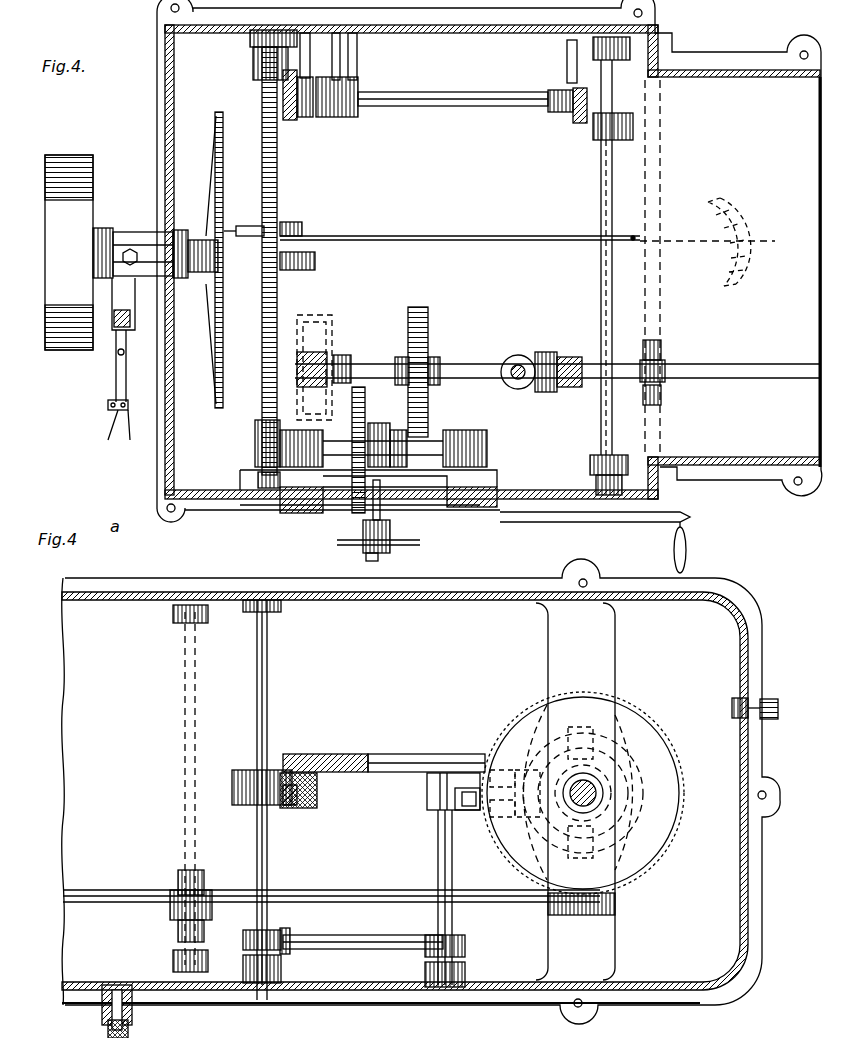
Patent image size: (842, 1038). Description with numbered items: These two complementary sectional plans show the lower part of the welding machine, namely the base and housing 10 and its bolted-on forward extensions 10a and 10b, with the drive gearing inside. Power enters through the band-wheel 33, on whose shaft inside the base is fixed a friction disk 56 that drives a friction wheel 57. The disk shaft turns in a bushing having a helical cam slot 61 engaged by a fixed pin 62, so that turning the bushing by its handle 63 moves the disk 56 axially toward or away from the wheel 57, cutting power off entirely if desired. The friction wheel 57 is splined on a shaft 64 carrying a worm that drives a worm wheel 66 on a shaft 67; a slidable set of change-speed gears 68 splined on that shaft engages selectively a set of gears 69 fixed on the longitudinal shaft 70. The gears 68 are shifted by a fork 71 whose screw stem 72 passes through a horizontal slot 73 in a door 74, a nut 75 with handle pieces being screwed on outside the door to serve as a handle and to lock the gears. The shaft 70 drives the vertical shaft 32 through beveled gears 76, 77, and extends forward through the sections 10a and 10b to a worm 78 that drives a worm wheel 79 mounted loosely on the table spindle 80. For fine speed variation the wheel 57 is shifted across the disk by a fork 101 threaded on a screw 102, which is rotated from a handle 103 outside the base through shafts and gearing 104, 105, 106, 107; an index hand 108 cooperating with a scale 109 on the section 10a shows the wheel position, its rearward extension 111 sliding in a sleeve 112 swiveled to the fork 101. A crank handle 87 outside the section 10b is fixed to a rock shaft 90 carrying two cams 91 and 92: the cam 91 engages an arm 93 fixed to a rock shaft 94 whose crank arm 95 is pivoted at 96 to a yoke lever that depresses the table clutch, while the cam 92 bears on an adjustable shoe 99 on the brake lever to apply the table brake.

In FIG. 4, the base and housing 10 is at (175, 108).
In FIG. 4, the forward sectional extension 10a is at (732, 268).
In FIG. 4A, the front section 10b is at (421, 791).
In FIG. 4, the band-wheel 33 is at (92, 158).
In FIG. 4, the helical cam slot 61 is at (130, 224).
In FIG. 4, the fixed pin 62 is at (128, 318).
In FIG. 4, the handle 63 is at (108, 430).
In FIG. 4, the friction disk 56 is at (224, 162).
In FIG. 4, the sleeve 112 is at (262, 222).
In FIG. 4, the shaft 64 is at (280, 200).
In FIG. 4, the fork 101 is at (302, 236).
In FIG. 4, the rearward extension 111 is at (437, 240).
In FIG. 4, the friction wheel 57 is at (318, 262).
In FIG. 4, the shafts and gearing 107 is at (296, 123).
In FIG. 4, the shafts and gearing 106 is at (482, 106).
In FIG. 4, the shafts and gearing 105 is at (588, 125).
In FIG. 4, the shafts and gearing 104 is at (606, 199).
In FIG. 4, the index hand 108 is at (688, 241).
In FIG. 4, the scale 109 is at (735, 242).
In FIG. 4, the screw 102 is at (282, 302).
In FIG. 4, the set of gears 69 is at (410, 357).
In FIG. 4, the longitudinal shaft 70 is at (472, 365).
In FIG. 4, the beveled gear 77 is at (517, 356).
In FIG. 4, the vertical shaft 32 is at (512, 381).
In FIG. 4, the beveled gear 76 is at (536, 396).
In FIG. 4, the worm wheel 66 is at (252, 430).
In FIG. 4, the shaft 67 is at (352, 462).
In FIG. 4, the change-speed gears 68 is at (397, 468).
In FIG. 4, the fork 71 is at (383, 480).
In FIG. 4, the screw stem 72 is at (415, 523).
In FIG. 4, the horizontal slot 73 is at (358, 537).
In FIG. 4, the door 74 is at (290, 511).
In FIG. 4, the nut 75 is at (370, 555).
In FIG. 4, the handle 103 is at (690, 550).
In FIG. 4A, the cam 92 is at (238, 786).
In FIG. 4A, the adjustable shoe 99 is at (297, 758).
In FIG. 4A, the pivot 96 is at (470, 774).
In FIG. 4A, the spindle 80 is at (598, 796).
In FIG. 4A, the worm wheel 79 is at (658, 863).
In FIG. 4A, the worm 78 is at (583, 918).
In FIG. 4A, the rock shaft 90 is at (268, 859).
In FIG. 4A, the rock shaft 94 is at (438, 858).
In FIG. 4A, the crank arm 95 is at (468, 812).
In FIG. 4A, the cam 91 is at (288, 940).
In FIG. 4A, the arm 93 is at (352, 950).
In FIG. 4A, the crank handle 87 is at (168, 1004).